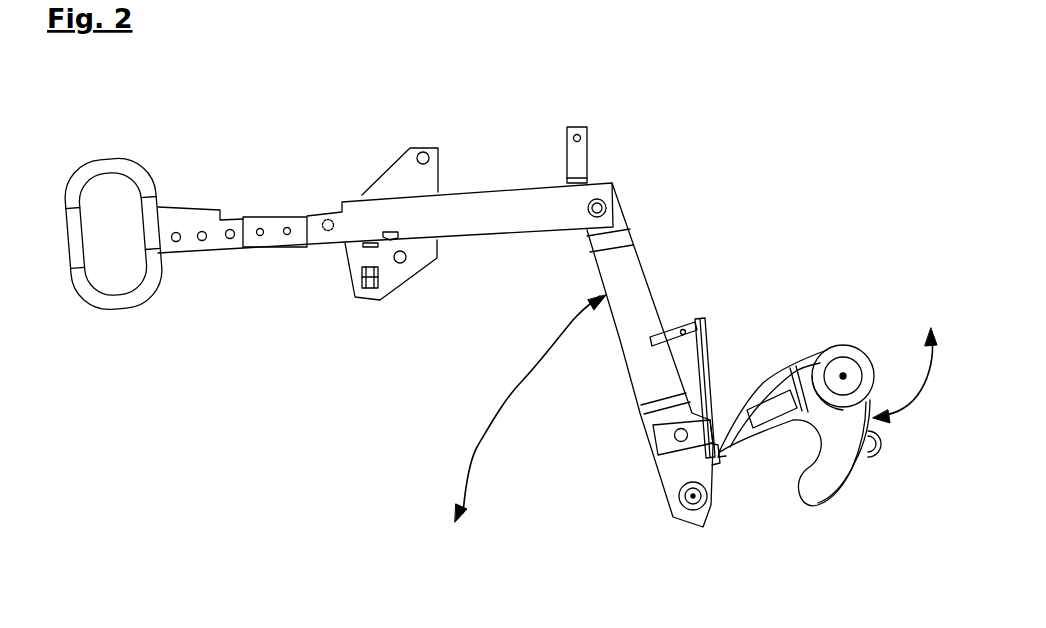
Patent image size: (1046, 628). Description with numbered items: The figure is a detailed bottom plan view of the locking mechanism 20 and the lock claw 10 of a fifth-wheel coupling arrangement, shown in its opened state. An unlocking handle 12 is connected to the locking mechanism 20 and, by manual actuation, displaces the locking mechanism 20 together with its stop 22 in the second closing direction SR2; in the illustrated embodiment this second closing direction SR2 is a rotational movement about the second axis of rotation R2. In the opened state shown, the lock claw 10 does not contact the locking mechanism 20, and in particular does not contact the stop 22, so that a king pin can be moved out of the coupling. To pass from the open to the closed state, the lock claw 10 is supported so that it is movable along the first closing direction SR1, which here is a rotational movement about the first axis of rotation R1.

The lock claw 10 is at (798, 374).
The unlocking handle 12 is at (487, 205).
The locking mechanism 20 is at (681, 143).
The stop 22 is at (663, 443).
The first axis of rotation R1 is at (843, 376).
The second axis of rotation R2 is at (693, 496).
The first closing direction SR1 is at (898, 415).
The second closing direction SR2 is at (497, 407).